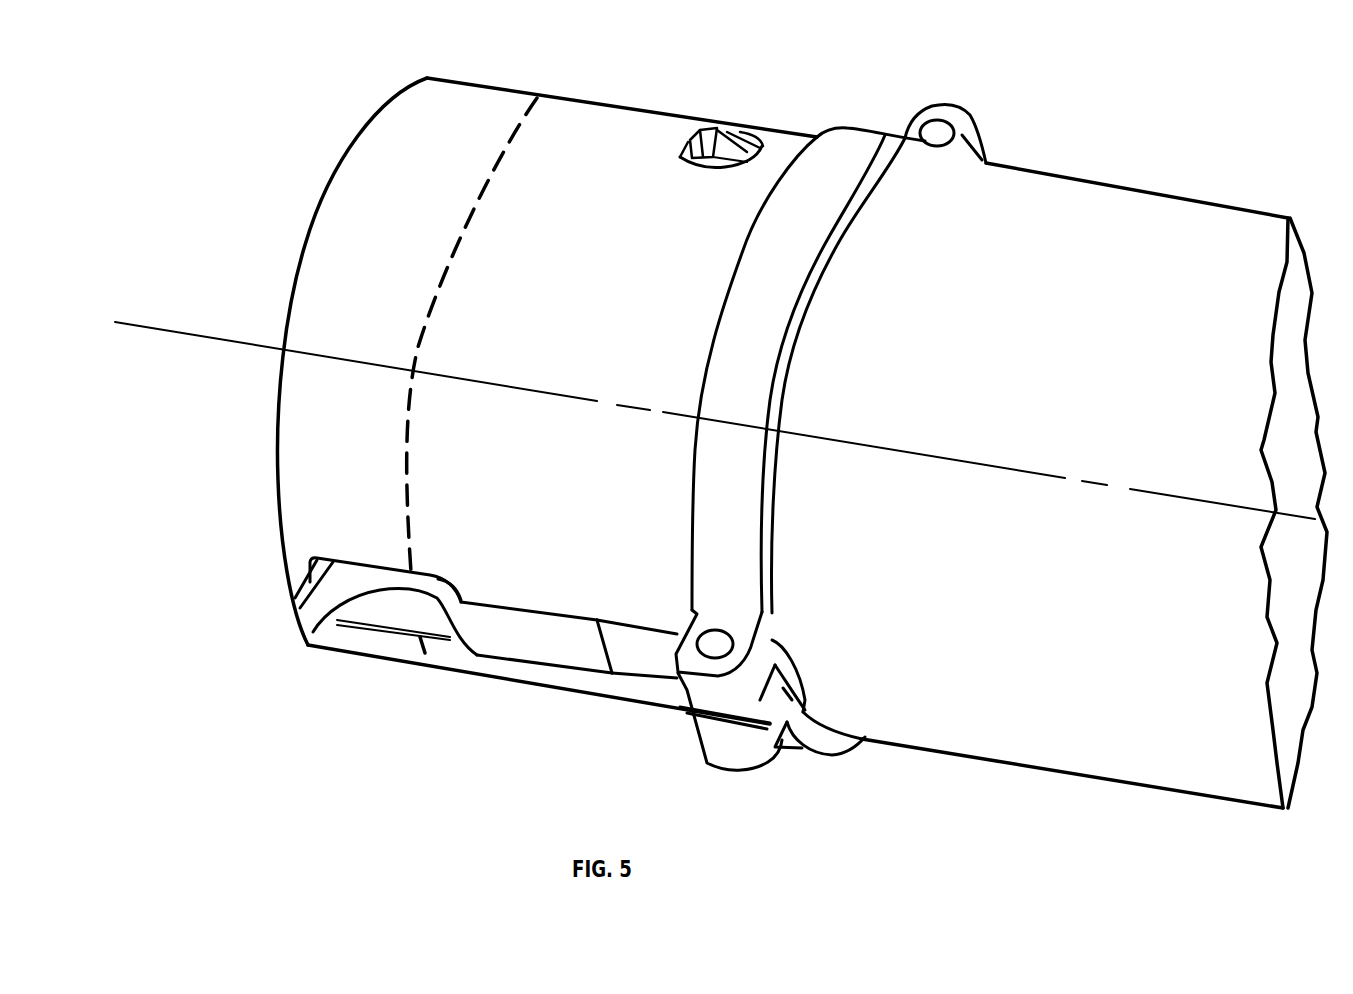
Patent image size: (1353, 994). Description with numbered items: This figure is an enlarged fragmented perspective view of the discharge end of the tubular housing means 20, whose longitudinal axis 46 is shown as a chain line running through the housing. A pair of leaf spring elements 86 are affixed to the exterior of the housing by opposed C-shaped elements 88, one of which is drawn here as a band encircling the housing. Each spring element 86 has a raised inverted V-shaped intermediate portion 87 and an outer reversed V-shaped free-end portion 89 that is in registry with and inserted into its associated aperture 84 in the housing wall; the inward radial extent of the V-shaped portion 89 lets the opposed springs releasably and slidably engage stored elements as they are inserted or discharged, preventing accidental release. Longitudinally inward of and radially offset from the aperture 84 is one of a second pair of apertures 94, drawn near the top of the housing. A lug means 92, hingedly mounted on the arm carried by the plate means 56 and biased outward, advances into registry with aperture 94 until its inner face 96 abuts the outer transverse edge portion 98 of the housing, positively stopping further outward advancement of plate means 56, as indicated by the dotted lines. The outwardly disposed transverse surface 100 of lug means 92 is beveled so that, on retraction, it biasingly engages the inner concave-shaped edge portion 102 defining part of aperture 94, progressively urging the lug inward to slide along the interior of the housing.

The tubular housing means 20 is at (1010, 237).
The axis 46 is at (205, 338).
The plate means 56 is at (440, 249).
The aperture 84 is at (393, 607).
The leaf spring element 86 is at (507, 650).
The raised inverted V-shaped intermediate portion 87 is at (550, 647).
The C-shaped element 88 is at (848, 160).
The reversed V-shaped free-end portion 89 is at (345, 577).
The lug means 92 is at (720, 148).
The aperture 94 is at (753, 140).
The inner face 96 is at (683, 140).
The outer transverse edge portion 98 is at (682, 160).
The beveled transverse surface 100 is at (727, 158).
The inner concave-shaped edge portion 102 is at (767, 132).